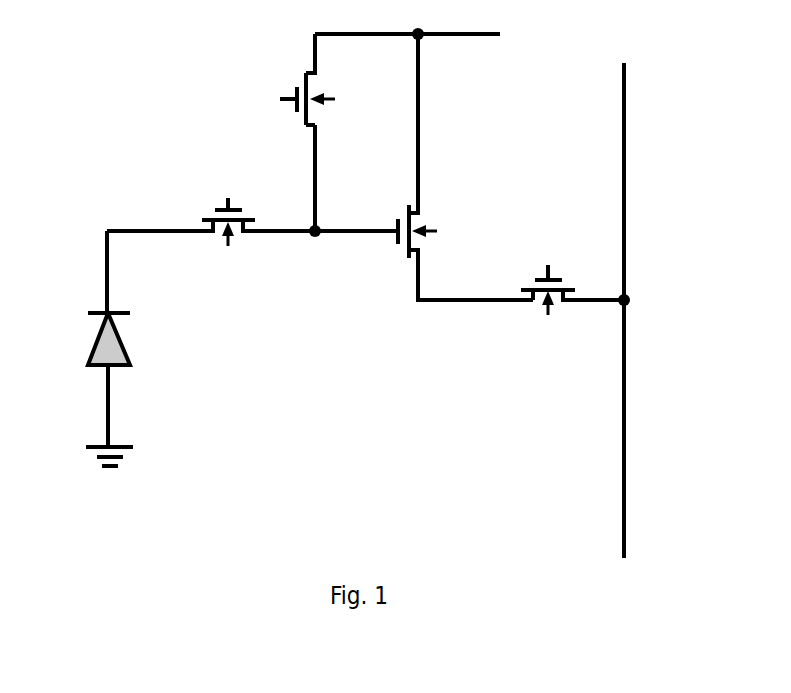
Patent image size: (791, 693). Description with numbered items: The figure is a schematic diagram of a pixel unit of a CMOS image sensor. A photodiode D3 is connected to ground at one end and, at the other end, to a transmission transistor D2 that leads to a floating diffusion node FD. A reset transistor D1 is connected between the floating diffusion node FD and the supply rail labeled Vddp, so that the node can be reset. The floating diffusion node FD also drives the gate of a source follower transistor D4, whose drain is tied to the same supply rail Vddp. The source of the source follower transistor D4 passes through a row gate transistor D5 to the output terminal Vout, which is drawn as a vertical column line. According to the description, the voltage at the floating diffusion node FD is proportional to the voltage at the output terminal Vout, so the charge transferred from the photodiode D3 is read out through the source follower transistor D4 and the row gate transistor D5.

The reset transistor D1 is at (287, 132).
The transmission transistor D2 is at (211, 205).
The photodiode D3 is at (87, 348).
The source follower transistor D4 is at (424, 167).
The row gate transistor D5 is at (572, 273).
The floating diffusion node FD is at (328, 254).
The pixel supply voltage Vddp is at (433, 20).
The output terminal Vout is at (666, 310).